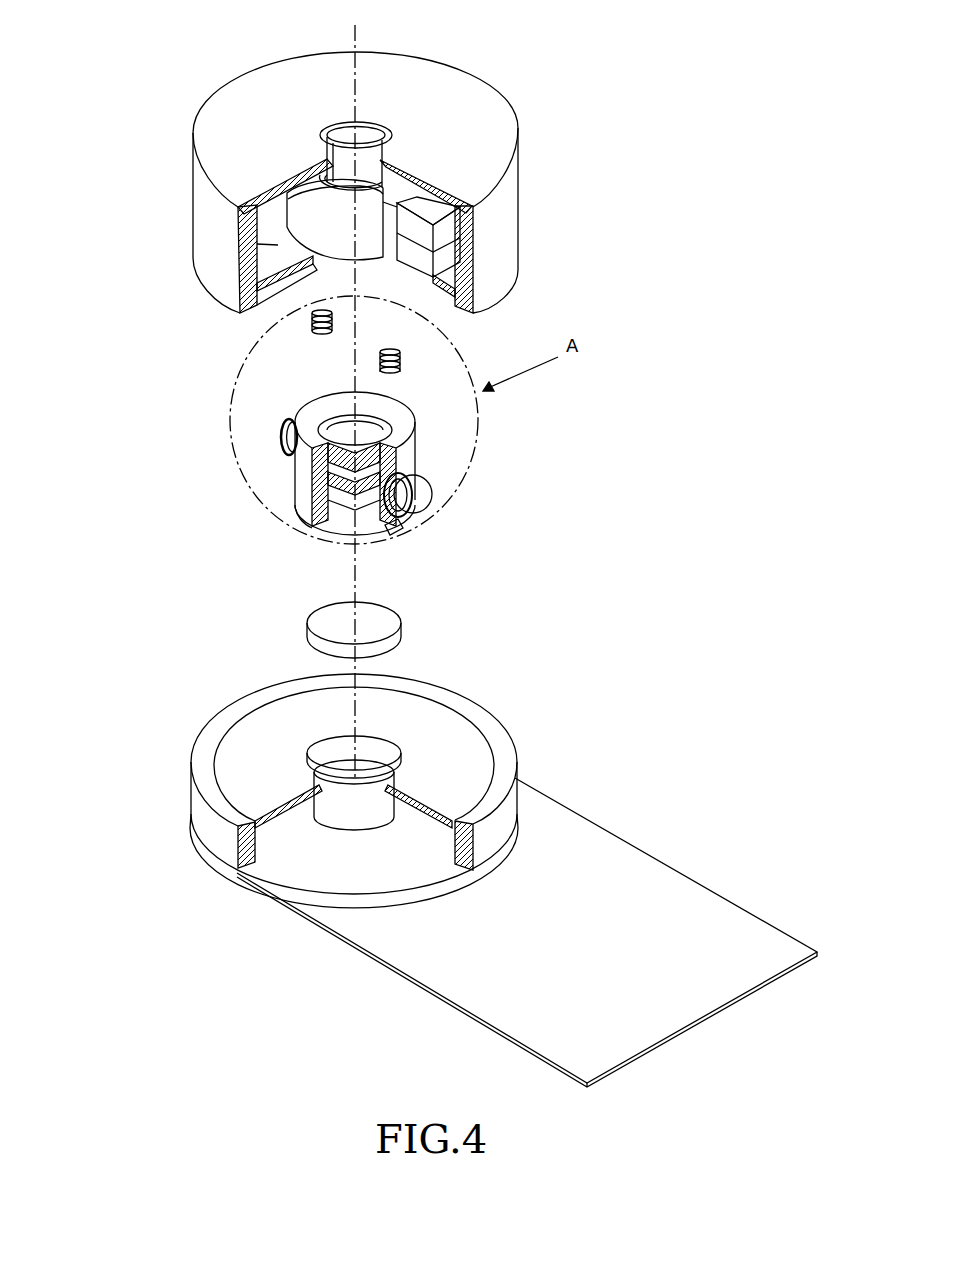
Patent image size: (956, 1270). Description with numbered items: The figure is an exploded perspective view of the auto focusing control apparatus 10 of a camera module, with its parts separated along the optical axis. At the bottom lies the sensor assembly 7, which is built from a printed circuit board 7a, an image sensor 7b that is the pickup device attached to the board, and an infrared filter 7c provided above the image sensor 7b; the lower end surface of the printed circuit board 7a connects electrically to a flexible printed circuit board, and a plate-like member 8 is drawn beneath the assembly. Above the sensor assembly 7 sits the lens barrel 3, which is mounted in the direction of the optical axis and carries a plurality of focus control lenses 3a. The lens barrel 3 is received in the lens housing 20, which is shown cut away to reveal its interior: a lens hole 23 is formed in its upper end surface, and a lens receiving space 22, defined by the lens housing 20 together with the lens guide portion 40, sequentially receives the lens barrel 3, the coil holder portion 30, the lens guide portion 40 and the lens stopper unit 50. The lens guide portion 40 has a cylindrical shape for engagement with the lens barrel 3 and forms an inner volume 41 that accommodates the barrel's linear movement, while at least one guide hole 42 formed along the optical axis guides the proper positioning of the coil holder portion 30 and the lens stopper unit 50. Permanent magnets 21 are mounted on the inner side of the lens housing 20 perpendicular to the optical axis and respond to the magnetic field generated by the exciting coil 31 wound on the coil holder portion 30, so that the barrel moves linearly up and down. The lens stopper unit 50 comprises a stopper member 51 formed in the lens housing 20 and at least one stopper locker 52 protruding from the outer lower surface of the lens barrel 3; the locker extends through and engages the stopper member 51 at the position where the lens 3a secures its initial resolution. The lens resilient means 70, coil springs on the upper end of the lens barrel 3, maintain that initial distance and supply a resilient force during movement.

The auto focusing control apparatus 10 is at (597, 103).
The lens housing 20 is at (522, 187).
The permanent magnets 21 is at (450, 223).
The lens receiving space 22 is at (240, 268).
The lens hole 23 is at (381, 131).
The lens barrel 3 is at (402, 417).
The focus control lenses 3a is at (402, 522).
The coil holder portion 30 is at (422, 497).
The exciting coil 31 is at (407, 476).
The lens guide portion 40 is at (290, 213).
The volume 41 is at (347, 155).
The guide hole 42 is at (410, 174).
The lens stopper unit 50 is at (141, 395).
The stopper member 51 is at (265, 338).
The stopper locker 52 is at (300, 530).
The lens resilient means 70 is at (400, 352).
The sensor assembly 7 is at (98, 885).
The printed circuit board 7a is at (273, 875).
The image sensor 7b is at (323, 805).
The infrared filter 7c is at (313, 633).
The substrate 8 is at (425, 963).